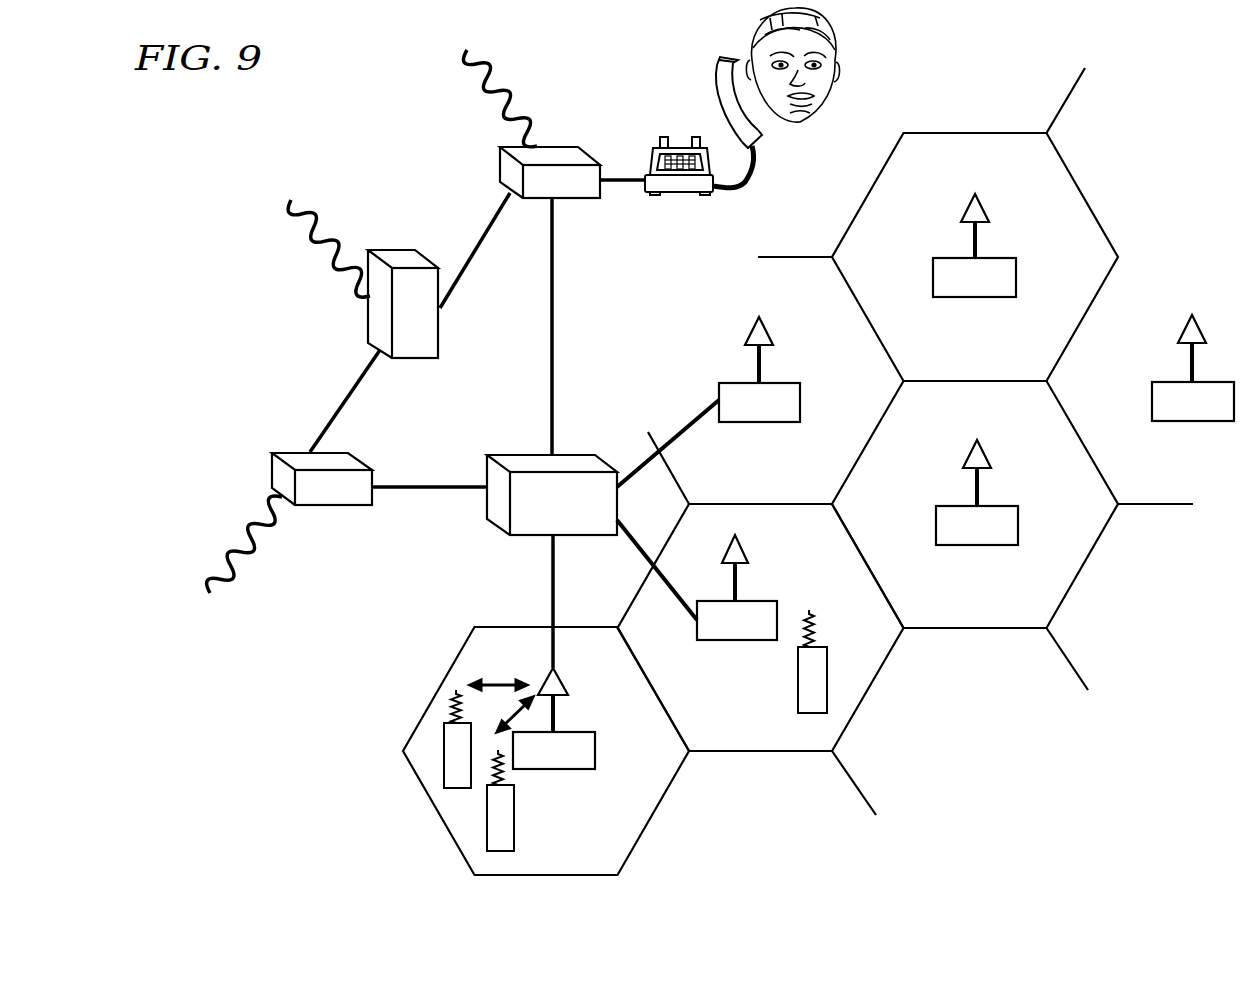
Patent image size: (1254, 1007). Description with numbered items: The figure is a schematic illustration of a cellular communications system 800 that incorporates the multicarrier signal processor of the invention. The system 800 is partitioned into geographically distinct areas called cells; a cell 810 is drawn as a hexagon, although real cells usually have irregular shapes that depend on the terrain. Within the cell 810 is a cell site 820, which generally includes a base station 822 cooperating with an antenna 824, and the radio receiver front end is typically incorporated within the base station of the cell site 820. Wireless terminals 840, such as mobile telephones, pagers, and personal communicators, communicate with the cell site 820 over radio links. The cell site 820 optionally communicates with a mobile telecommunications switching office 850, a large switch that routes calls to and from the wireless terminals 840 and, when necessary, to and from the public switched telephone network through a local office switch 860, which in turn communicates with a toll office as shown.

The cellular communications system 800 is at (228, 309).
The cell 810 is at (761, 751).
The cell site 820 is at (977, 240).
The base station 822 is at (596, 750).
The antenna 824 is at (566, 680).
The wireless terminals 840 is at (444, 755).
The mobile telecommunications switching office (MTSO) 850 is at (487, 517).
The local office switch 860 is at (272, 470).